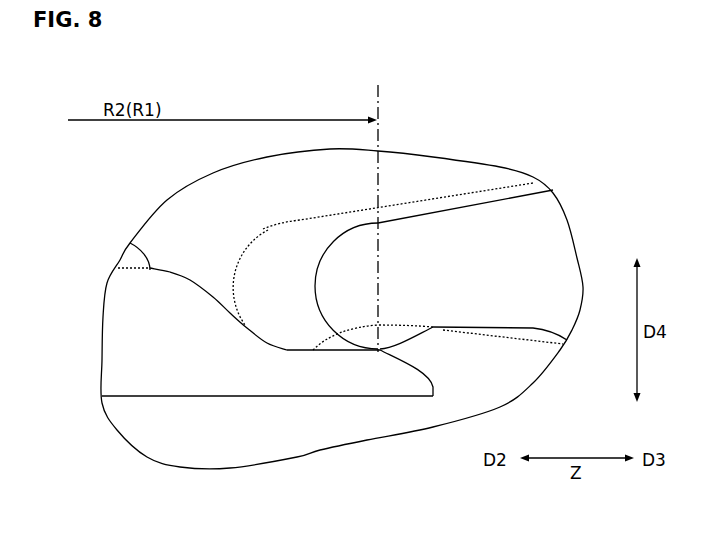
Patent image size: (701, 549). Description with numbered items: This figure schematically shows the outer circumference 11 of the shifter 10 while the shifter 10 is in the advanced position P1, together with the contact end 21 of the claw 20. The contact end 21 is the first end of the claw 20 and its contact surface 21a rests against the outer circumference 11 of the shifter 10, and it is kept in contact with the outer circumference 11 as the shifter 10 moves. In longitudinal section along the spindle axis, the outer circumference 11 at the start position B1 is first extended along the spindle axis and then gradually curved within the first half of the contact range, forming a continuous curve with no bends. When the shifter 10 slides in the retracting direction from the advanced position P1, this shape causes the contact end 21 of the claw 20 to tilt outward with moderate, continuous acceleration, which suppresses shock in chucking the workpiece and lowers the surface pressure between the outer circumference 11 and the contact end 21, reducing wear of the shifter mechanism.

The shifter 10 is at (118, 400).
The outer circumference 11 is at (130, 245).
The claw 20 is at (515, 185).
The contact end 21 is at (263, 228).
The contact surface 21a is at (380, 350).
The start position B1 is at (380, 350).
The advanced position P1 is at (160, 431).